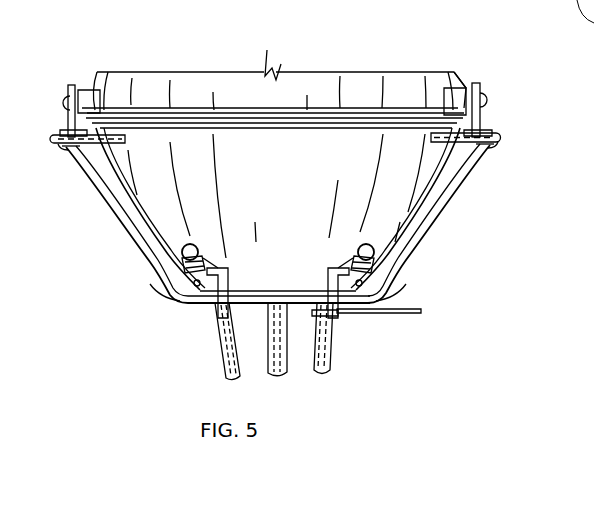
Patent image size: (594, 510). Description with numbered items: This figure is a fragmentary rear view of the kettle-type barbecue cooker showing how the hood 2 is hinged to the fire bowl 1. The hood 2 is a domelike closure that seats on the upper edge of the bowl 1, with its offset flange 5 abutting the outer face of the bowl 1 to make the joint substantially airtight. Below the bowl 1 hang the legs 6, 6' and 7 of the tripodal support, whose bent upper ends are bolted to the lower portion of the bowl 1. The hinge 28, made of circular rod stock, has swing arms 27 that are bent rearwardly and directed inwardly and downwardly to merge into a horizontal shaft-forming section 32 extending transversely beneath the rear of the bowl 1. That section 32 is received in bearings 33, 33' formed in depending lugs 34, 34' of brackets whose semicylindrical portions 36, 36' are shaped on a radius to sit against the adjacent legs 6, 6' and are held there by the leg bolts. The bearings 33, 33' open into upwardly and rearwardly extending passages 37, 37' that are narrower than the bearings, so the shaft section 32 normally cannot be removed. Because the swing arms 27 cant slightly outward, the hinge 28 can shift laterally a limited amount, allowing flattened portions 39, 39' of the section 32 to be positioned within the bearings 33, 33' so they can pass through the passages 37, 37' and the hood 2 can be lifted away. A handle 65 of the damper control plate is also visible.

The fire bowl 1 is at (447, 218).
The hood 2 is at (462, 85).
The offset flange 5 is at (494, 124).
The leg 6 is at (281, 375).
The leg 6' is at (352, 357).
The leg 7 is at (283, 377).
The swing arm 27 is at (437, 233).
The hinge 28 is at (461, 198).
The shaft-forming section 32 is at (172, 303).
The bearing 33 is at (157, 345).
The bearing 33' is at (432, 353).
The depending lug 34 is at (158, 363).
The depending lug 34' is at (431, 368).
The semicylindrical portion 36 is at (115, 294).
The semicylindrical portion 36' is at (441, 308).
The passage 37 is at (200, 367).
The passage 37' is at (426, 339).
The flattened portion 39 is at (144, 333).
The flattened portion 39' is at (426, 382).
The handle 65 is at (425, 312).